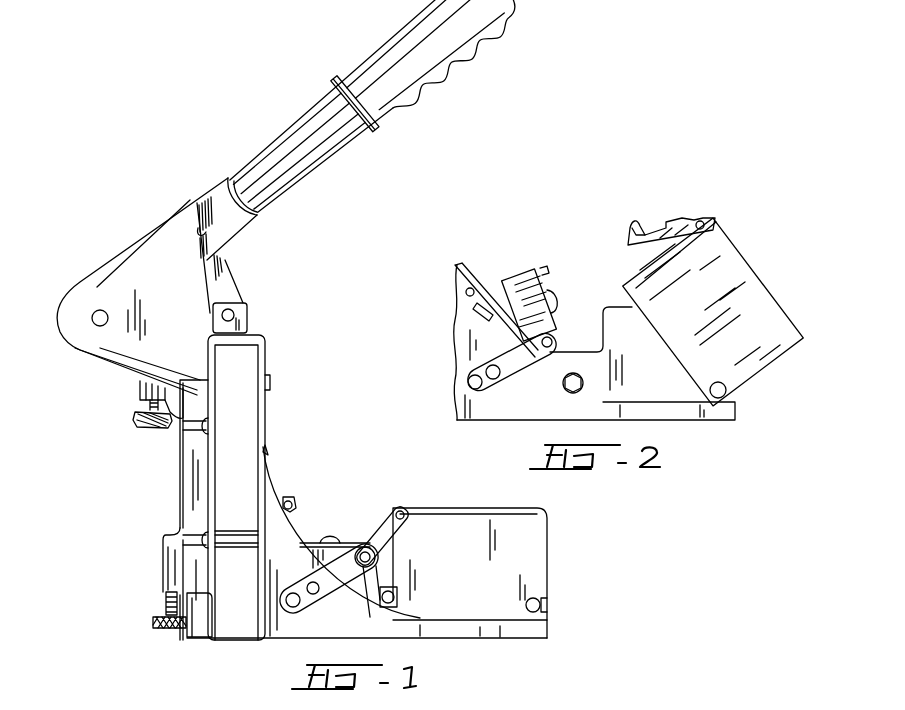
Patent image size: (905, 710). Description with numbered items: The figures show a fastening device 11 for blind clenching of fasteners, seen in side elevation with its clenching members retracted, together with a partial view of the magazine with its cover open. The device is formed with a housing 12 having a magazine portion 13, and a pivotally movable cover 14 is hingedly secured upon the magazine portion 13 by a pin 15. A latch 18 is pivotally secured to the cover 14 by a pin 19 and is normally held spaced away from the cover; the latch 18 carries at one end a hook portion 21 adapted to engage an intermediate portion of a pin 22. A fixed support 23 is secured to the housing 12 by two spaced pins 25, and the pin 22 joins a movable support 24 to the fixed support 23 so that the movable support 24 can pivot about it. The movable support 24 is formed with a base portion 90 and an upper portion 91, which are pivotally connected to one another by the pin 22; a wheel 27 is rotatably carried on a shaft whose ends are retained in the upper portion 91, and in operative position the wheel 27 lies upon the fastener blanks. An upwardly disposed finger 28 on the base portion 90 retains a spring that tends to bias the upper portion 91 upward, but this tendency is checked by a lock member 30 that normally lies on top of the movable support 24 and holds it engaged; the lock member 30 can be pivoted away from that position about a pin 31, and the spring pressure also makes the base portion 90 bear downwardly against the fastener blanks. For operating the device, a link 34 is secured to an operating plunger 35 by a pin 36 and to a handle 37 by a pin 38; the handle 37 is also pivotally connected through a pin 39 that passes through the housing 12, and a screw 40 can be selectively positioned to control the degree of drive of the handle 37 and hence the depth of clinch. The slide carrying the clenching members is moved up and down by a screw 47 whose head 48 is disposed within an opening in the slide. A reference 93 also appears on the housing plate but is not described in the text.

In FIG. 1, the fastening device 11 is at (236, 148).
In FIG. 1, the housing 12 is at (134, 230).
In FIG. 1, the magazine portion 13 is at (512, 630).
In FIG. 2, the magazine portion 13 is at (700, 415).
In FIG. 1, the cover 14 is at (535, 538).
In FIG. 2, the cover 14 is at (775, 318).
In FIG. 1, the pin 15 is at (542, 603).
In FIG. 2, the pin 15 is at (730, 393).
In FIG. 1, the latch 18 is at (394, 527).
In FIG. 2, the latch 18 is at (672, 225).
In FIG. 1, the pin 19 is at (405, 513).
In FIG. 2, the pin 19 is at (704, 222).
In FIG. 1, the hook portion 21 is at (372, 590).
In FIG. 2, the hook portion 21 is at (634, 224).
In FIG. 1, the pin 22 is at (364, 552).
In FIG. 2, the pin 22 is at (553, 341).
In FIG. 1, the fixed support 23 is at (320, 600).
In FIG. 2, the fixed support 23 is at (530, 360).
In FIG. 1, the movable support 24 is at (323, 552).
In FIG. 2, the movable support 24 is at (530, 278).
In FIG. 1, the pins 25 is at (288, 598).
In FIG. 2, the pins 25 is at (496, 380).
In FIG. 1, the wheel 27 is at (315, 540).
In FIG. 2, the wheel 27 is at (556, 300).
In FIG. 2, the finger 28 is at (548, 268).
In FIG. 1, the lock member 30 is at (297, 512).
In FIG. 2, the lock member 30 is at (485, 305).
In FIG. 1, the pin 31 is at (289, 500).
In FIG. 2, the pin 31 is at (470, 287).
In FIG. 1, the link 34 is at (232, 284).
In FIG. 1, the operating plunger 35 is at (249, 322).
In FIG. 1, the pin 36 is at (235, 312).
In FIG. 1, the handle 37 is at (259, 221).
In FIG. 1, the pin 38 is at (209, 238).
In FIG. 1, the pin 39 is at (98, 310).
In FIG. 1, the screw 40 is at (140, 428).
In FIG. 1, the screw 47 is at (164, 602).
In FIG. 1, the head 48 is at (153, 622).
In FIG. 2, the base portion 90 is at (512, 310).
In FIG. 2, the upper portion 91 is at (545, 290).
In FIG. 1, the lever plate 93 is at (160, 303).